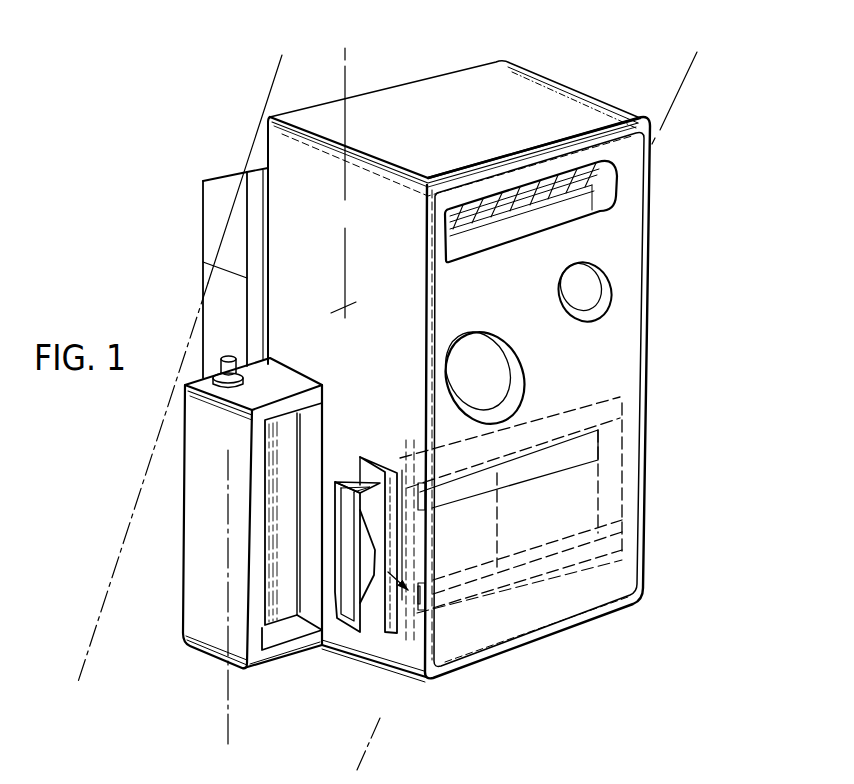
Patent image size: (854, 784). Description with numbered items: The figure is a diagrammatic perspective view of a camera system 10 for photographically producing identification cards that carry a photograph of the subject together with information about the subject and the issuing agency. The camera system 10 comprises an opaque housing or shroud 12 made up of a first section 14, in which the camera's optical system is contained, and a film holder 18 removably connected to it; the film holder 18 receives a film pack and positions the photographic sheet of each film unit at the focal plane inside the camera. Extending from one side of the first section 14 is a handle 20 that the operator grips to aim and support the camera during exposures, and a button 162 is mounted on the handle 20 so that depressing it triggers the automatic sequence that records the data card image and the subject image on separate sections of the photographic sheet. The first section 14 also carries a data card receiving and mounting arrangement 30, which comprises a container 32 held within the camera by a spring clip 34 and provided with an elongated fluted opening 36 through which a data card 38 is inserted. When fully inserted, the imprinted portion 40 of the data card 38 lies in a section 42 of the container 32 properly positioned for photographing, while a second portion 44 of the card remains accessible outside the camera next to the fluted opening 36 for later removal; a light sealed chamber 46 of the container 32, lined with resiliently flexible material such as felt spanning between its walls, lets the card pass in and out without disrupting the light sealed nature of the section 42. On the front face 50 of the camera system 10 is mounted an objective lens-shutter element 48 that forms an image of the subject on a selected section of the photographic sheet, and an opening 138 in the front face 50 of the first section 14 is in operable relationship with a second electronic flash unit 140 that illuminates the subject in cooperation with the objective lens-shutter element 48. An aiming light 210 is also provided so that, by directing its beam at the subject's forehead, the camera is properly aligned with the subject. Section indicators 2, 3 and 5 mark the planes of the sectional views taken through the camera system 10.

The camera system 10 is at (683, 293).
The opaque housing 12 is at (535, 73).
The first section 14 is at (630, 242).
The film holder 18 is at (215, 293).
The handle 20 is at (188, 548).
The data card receiving and mounting arrangement 30 is at (349, 583).
The container 32 is at (618, 396).
The spring clip 34 is at (503, 570).
The elongated fluted opening 36 is at (334, 592).
The data card 38 is at (345, 573).
The portion of the data card 40 is at (588, 477).
The section of the container 42 is at (608, 505).
The second portion of the data card 44 is at (347, 540).
The light sealed chamber 46 is at (413, 625).
The objective lens-shutter element 48 is at (480, 347).
The front face 50 is at (587, 153).
The opening 138 is at (592, 215).
The second electronic flash unit 140 is at (588, 182).
The button 162 is at (240, 368).
The aiming light 210 is at (575, 288).
The section line 2- 2 is at (425, 38).
The section line 3- 3 is at (628, 45).
The section line 5- 5 is at (328, 88).